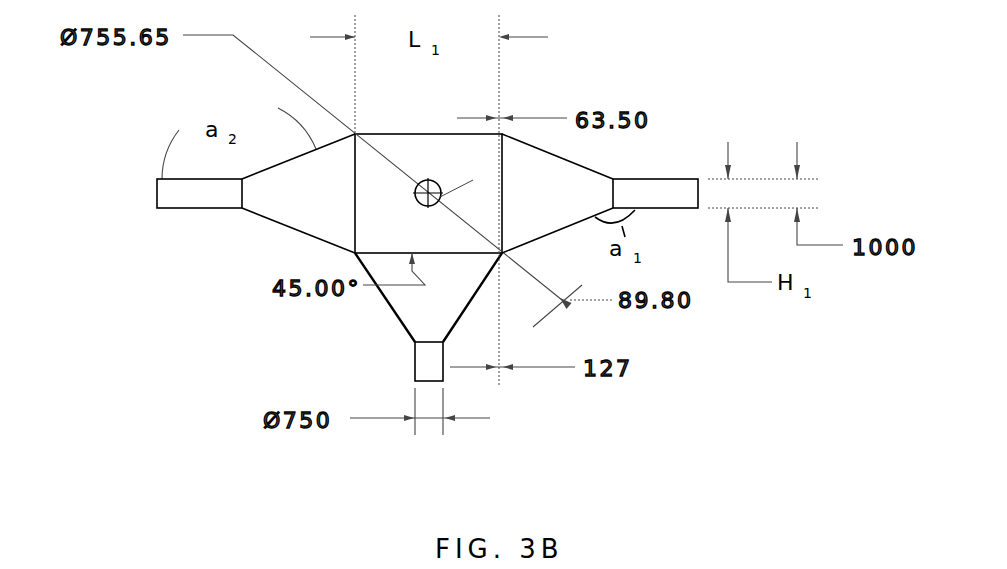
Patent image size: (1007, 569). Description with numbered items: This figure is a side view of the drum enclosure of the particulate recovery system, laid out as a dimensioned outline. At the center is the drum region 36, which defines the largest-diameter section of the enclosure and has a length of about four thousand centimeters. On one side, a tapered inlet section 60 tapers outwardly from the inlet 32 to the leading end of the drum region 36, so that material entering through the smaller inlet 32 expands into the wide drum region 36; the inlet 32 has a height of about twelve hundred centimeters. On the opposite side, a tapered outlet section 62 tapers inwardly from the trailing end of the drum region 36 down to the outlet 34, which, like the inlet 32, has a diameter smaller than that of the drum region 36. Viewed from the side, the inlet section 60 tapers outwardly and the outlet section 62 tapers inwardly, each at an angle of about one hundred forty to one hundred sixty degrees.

The inlet 32 is at (645, 192).
The outlet 34 is at (199, 197).
The drum region 36 is at (402, 153).
The tapered inlet section 60 is at (562, 207).
The tapered outlet section 62 is at (317, 207).